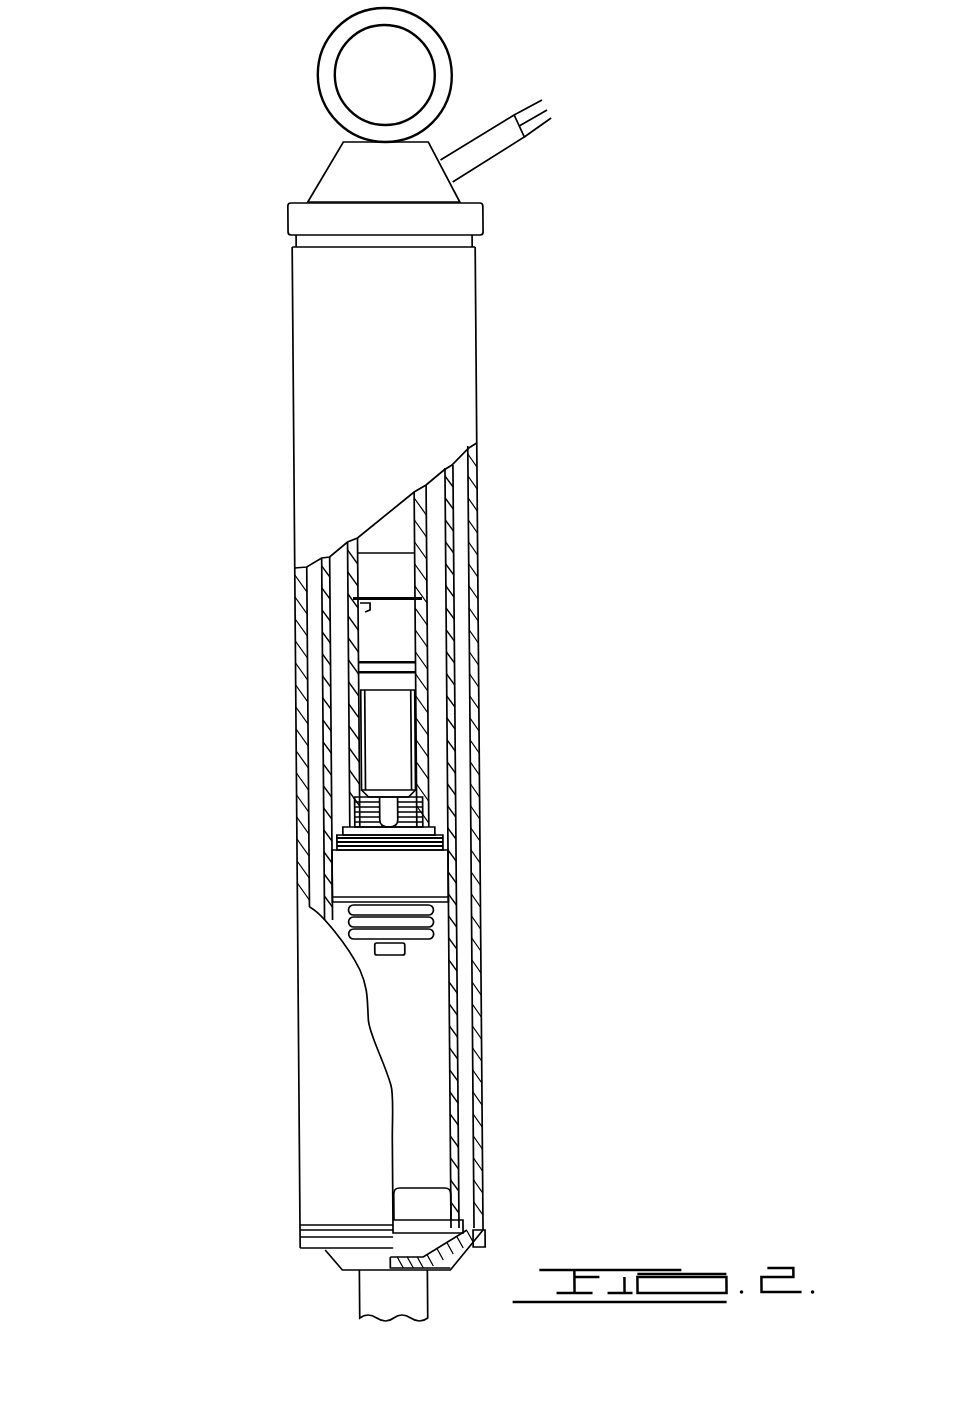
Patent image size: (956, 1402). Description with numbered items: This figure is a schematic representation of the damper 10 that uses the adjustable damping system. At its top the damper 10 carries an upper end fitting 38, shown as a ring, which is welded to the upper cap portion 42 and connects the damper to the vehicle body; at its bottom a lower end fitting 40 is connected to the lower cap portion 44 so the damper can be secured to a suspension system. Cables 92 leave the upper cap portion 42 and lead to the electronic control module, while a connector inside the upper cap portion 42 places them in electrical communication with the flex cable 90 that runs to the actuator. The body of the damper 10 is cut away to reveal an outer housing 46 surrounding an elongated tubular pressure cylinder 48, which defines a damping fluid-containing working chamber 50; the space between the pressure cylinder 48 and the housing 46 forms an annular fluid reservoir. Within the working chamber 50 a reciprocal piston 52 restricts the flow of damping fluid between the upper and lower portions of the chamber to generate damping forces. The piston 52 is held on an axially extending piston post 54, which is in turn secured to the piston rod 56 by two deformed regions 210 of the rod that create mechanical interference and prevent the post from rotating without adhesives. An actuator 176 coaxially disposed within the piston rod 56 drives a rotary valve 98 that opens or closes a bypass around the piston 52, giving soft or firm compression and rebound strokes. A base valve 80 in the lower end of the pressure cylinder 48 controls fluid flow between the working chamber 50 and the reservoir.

The damper 10 is at (158, 104).
The upper end fitting 38 is at (329, 74).
The cables 92 is at (494, 154).
The upper cap portion 42 is at (298, 217).
The housing 46 is at (302, 711).
The working chamber 50 is at (315, 660).
The pressure cylinder 48 is at (327, 605).
The flex cable 90 is at (400, 538).
The actuator 176 is at (413, 644).
The rotary valve 98 is at (403, 746).
The deformed regions 210 is at (355, 818).
The piston post 54 is at (362, 805).
The reciprocal piston 52 is at (345, 876).
The piston rod 56 is at (343, 926).
The base valve 80 is at (443, 1203).
The lower end fitting 40 is at (350, 1258).
The lower cap portion 44 is at (370, 1305).